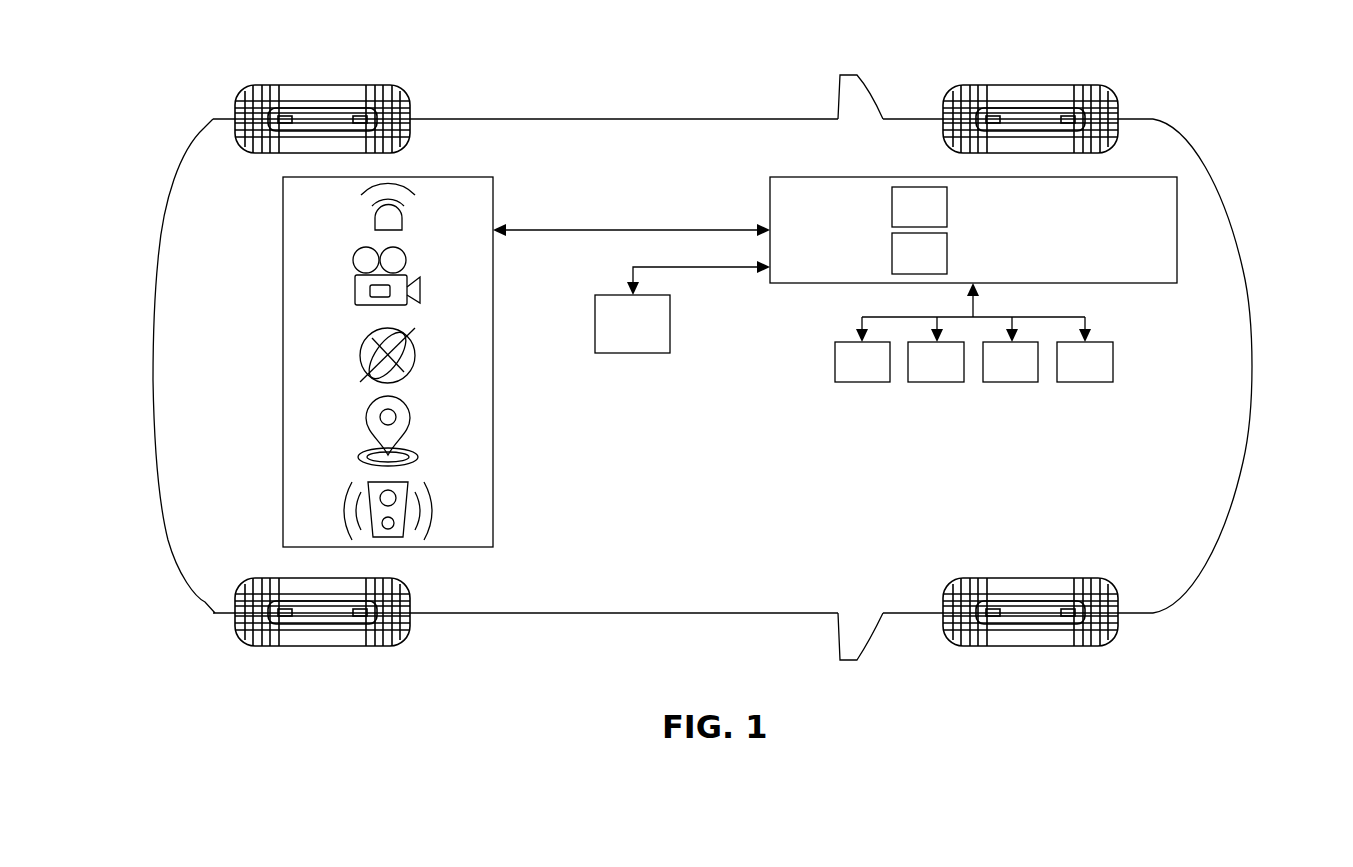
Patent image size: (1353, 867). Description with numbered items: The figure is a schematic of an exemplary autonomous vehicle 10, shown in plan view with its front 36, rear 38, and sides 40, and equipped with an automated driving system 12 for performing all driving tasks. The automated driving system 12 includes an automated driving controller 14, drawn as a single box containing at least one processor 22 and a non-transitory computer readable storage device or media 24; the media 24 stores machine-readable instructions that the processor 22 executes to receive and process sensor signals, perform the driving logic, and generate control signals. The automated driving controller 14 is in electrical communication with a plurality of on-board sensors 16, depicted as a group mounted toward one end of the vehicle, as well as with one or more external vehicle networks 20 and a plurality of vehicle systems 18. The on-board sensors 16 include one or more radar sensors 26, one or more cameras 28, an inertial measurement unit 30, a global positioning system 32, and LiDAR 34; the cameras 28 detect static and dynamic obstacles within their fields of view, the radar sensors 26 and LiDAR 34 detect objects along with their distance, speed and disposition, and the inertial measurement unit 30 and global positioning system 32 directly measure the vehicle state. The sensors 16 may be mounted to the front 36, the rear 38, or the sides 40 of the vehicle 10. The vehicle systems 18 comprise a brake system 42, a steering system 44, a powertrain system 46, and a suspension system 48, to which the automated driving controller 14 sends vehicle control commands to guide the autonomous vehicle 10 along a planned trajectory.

The autonomous vehicle 10 is at (518, 38).
The automated driving system 12 is at (1146, 134).
The automated driving controller 14 is at (1177, 228).
The on-board sensors 16 is at (453, 177).
The vehicle systems 18 is at (891, 422).
The external vehicle networks 20 is at (650, 342).
The processor 22 is at (936, 220).
The non-transitory computer readable storage device or media 24 is at (936, 270).
The radar sensors 26 is at (402, 222).
The cameras 28 is at (355, 295).
The inertial measurement unit 30 is at (360, 355).
The global positioning system 32 is at (358, 455).
The LiDAR 34 is at (345, 510).
The front 36 is at (1253, 367).
The rear 38 is at (153, 367).
The sides 40 is at (548, 119).
The brake system 42 is at (879, 375).
The steering system 44 is at (953, 375).
The powertrain system 46 is at (1028, 375).
The suspension system 48 is at (1102, 375).